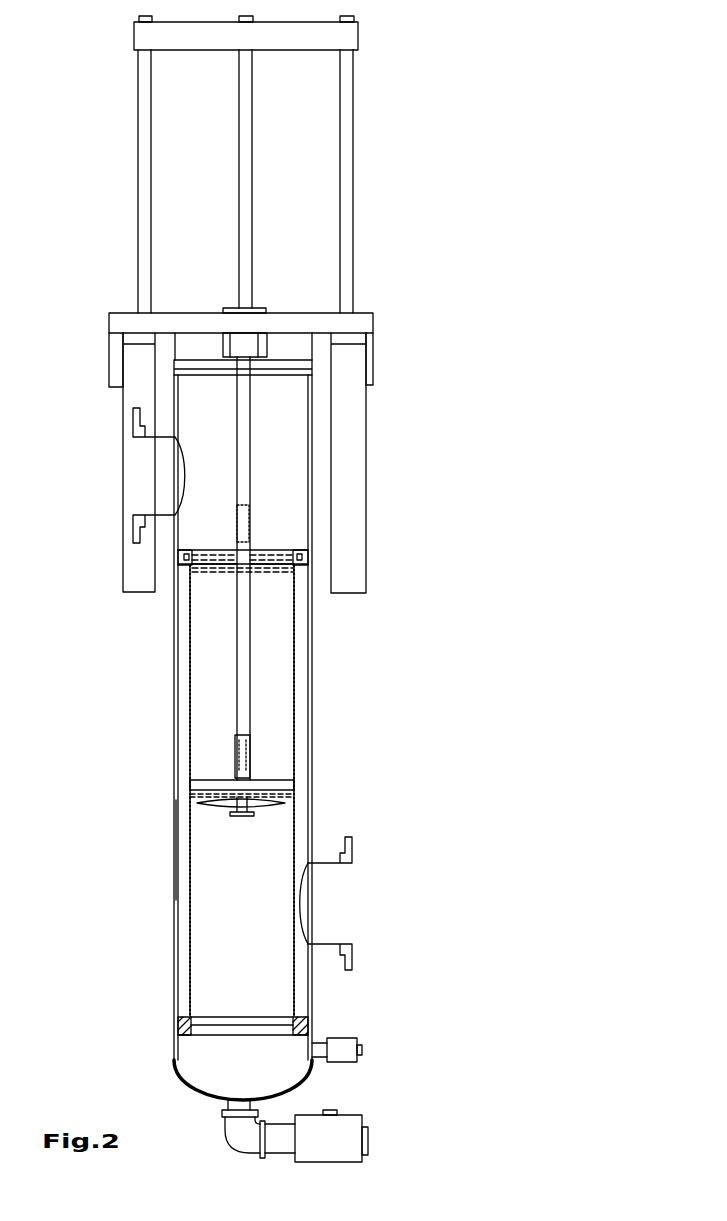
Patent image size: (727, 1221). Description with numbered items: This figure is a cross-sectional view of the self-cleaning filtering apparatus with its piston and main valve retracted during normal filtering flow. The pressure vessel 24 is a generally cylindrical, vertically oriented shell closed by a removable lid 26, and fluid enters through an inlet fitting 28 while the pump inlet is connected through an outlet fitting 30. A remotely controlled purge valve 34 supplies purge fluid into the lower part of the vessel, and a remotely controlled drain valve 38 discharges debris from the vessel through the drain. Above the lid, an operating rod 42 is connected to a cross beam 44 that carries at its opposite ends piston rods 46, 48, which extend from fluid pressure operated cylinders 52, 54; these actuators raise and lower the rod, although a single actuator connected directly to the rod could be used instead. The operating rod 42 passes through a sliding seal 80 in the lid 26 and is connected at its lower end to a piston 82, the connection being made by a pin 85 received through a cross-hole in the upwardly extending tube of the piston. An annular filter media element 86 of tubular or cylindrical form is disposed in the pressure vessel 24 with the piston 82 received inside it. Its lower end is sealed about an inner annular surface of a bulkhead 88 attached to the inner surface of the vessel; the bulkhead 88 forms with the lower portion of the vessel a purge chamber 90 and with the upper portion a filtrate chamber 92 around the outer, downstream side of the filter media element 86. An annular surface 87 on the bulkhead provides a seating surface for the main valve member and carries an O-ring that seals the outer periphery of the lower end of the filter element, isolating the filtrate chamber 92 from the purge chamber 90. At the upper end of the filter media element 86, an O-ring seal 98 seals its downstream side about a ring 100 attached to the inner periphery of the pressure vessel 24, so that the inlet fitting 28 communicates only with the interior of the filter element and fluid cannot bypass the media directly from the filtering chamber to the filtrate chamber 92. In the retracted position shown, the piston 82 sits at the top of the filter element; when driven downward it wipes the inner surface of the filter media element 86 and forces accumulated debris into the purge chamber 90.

The pressure vessel 24 is at (175, 653).
The removable lid 26 is at (303, 358).
The inlet fitting 28 is at (162, 517).
The outlet fitting 30 is at (325, 862).
The purge valve 34 is at (343, 1040).
The drain valve 38 is at (352, 1138).
The operating rod 42 is at (245, 172).
The cross beam 44 is at (165, 33).
The piston rod 46 is at (147, 176).
The piston rod 48 is at (348, 178).
The fluid pressure operated cylinder 52 is at (100, 462).
The fluid pressure operated cylinder 54 is at (365, 446).
The sliding seal 80 is at (228, 349).
The piston 82 is at (222, 772).
The pin 85 is at (235, 745).
The annular filter media element 86 is at (180, 863).
The annular surface 87 is at (292, 1028).
The bulkhead 88 is at (293, 1037).
The purge chamber 90 is at (223, 1061).
The filtrate chamber 92 is at (303, 750).
The O-ring seal 98 is at (300, 558).
The ring 100 is at (302, 568).